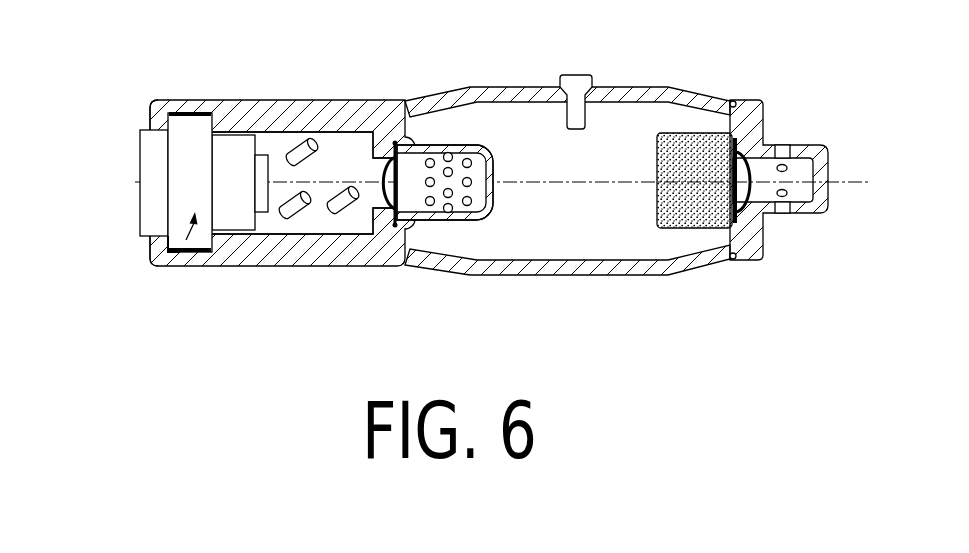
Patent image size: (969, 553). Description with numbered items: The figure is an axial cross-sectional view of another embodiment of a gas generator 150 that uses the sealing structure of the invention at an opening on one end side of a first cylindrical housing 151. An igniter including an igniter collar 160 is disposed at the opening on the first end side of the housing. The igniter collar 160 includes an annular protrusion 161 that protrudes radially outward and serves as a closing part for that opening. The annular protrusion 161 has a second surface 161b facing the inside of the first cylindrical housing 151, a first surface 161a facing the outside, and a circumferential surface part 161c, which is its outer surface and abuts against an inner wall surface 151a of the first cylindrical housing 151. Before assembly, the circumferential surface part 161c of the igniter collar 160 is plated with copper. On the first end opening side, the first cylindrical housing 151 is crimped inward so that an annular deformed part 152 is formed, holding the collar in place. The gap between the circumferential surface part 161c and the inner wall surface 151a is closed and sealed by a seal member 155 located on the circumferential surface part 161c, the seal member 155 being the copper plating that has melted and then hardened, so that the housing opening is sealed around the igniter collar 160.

The gas generator 150 is at (640, 74).
The first cylindrical housing 151 is at (310, 98).
The inner wall surface 151a is at (318, 222).
The annular deformed part 152 is at (151, 118).
The seal member 155 is at (183, 111).
The igniter collar 160 is at (153, 200).
The annular protrusion 161 is at (186, 240).
The first surface 161a is at (167, 247).
The second surface 161b is at (220, 252).
The circumferential surface part 161c is at (192, 138).